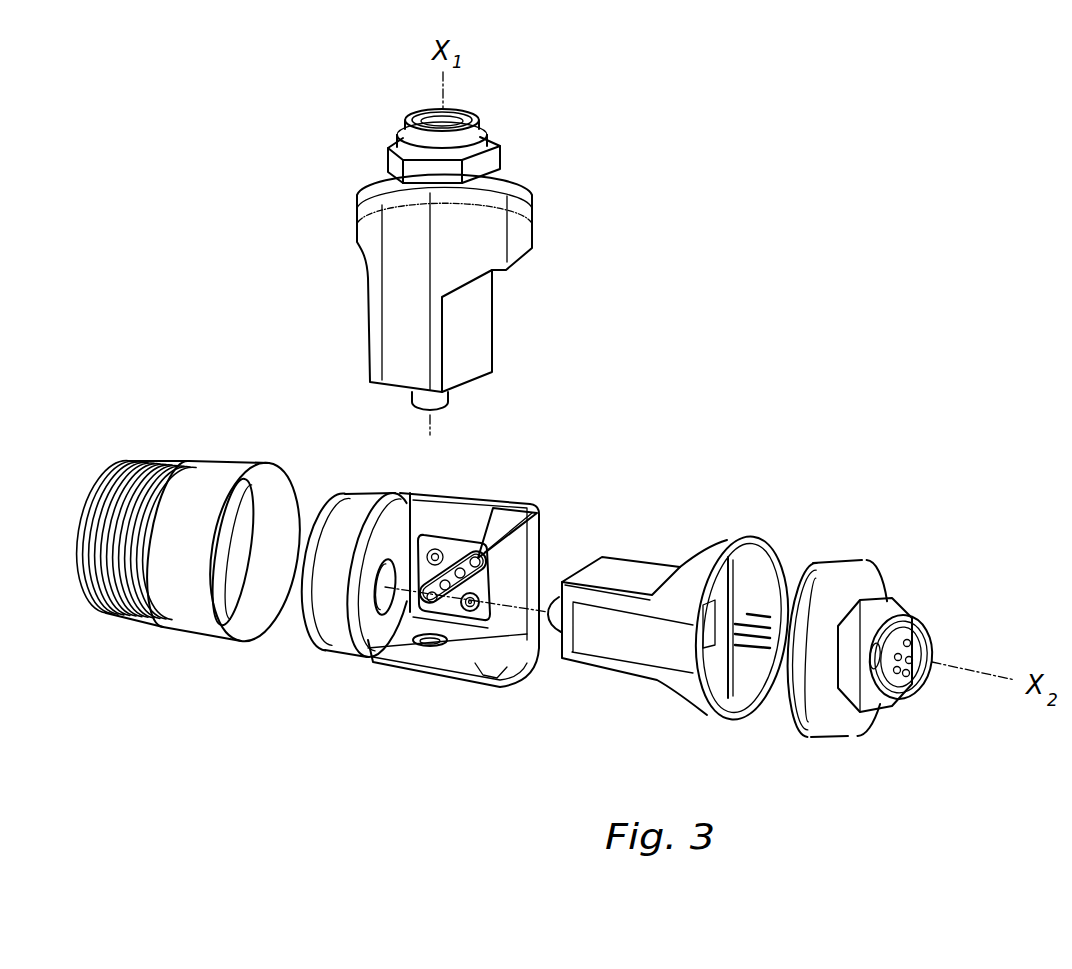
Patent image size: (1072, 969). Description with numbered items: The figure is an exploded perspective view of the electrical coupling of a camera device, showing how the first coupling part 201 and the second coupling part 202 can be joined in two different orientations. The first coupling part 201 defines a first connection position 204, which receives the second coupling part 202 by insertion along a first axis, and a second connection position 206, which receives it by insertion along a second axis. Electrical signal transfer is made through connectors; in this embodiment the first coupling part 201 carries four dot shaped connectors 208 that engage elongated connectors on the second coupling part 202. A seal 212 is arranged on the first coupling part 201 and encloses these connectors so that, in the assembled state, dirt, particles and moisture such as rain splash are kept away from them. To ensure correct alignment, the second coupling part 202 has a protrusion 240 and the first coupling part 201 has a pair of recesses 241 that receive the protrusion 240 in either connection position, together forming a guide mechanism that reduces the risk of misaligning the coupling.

The first coupling part 201 is at (346, 525).
The second coupling part 202 is at (363, 282).
The first connection position 204 is at (558, 318).
The second connection position 206 is at (768, 472).
The dot shaped connectors 208 is at (396, 492).
The seal 212 is at (488, 623).
The protrusion 240 is at (549, 636).
The recesses 241 is at (382, 570).